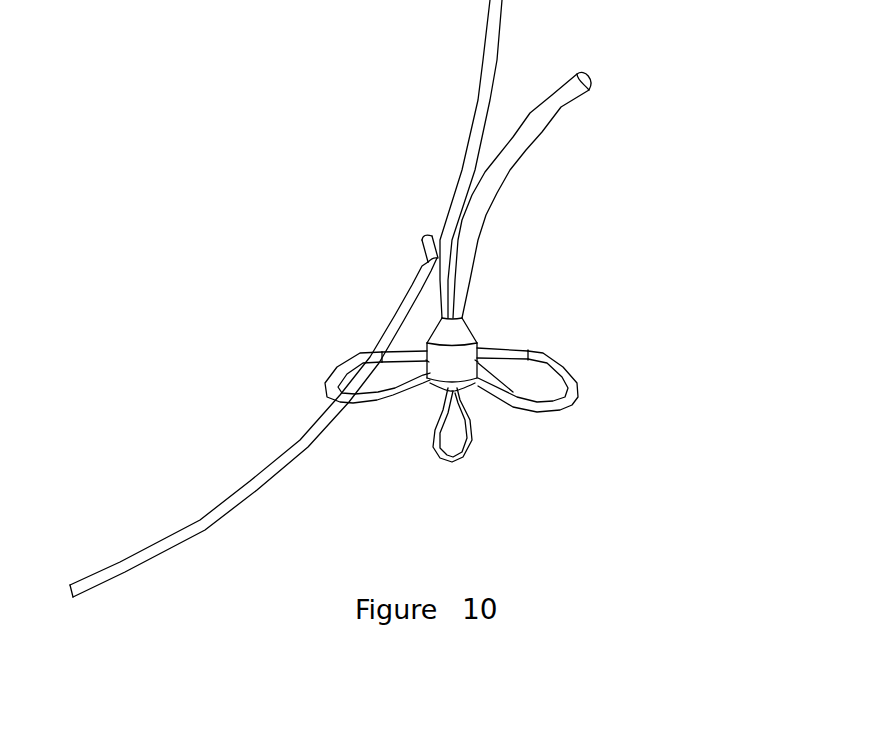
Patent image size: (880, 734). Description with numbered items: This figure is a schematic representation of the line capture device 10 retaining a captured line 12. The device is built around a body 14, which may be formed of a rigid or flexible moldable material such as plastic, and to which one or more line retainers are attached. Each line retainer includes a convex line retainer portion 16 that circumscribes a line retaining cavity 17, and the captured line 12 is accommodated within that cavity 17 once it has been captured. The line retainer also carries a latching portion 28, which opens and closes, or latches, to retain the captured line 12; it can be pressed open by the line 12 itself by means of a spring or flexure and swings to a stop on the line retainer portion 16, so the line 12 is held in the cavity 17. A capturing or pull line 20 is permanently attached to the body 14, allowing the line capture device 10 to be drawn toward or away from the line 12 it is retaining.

The line capture device 10 is at (424, 321).
The captured line 12 is at (233, 493).
The body 14 is at (510, 397).
The line retainer portion 16 is at (338, 372).
The line retaining cavity 17 is at (547, 390).
The capturing line 20 is at (518, 161).
The latching portion 28 is at (497, 348).